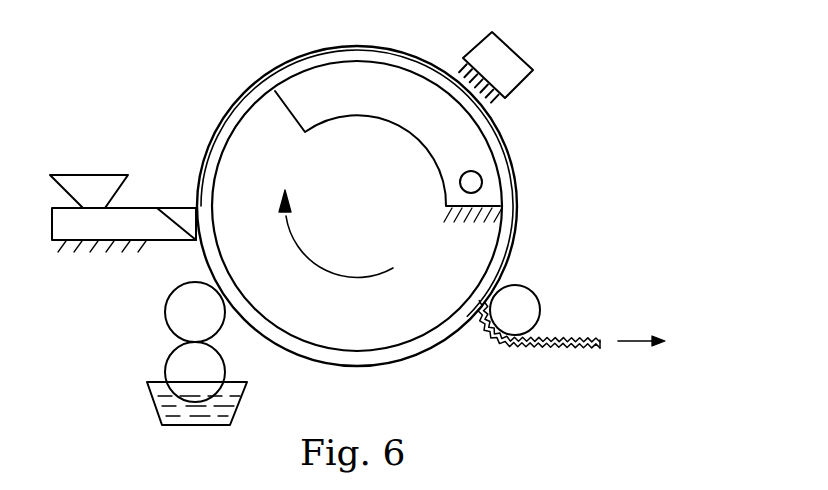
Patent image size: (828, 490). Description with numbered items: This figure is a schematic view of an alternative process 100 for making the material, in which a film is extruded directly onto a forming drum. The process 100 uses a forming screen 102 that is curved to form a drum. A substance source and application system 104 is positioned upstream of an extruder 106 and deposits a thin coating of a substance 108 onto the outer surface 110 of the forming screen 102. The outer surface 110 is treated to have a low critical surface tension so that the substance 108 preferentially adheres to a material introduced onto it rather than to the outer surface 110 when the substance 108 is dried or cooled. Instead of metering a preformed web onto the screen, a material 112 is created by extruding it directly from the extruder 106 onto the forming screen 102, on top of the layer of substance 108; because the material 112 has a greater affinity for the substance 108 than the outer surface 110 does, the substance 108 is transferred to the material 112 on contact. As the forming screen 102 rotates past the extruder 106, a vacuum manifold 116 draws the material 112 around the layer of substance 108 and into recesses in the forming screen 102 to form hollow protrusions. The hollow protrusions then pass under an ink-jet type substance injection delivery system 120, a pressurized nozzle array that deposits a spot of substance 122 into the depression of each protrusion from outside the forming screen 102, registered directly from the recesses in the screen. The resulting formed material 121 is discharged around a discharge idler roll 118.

The process 100 is at (603, 90).
The forming screen 102 is at (327, 355).
The substance source and application system 104 is at (173, 318).
The extruder 106 is at (147, 232).
The substance 108 is at (202, 258).
The outer surface 110 is at (390, 363).
The material 112 is at (218, 117).
The vacuum manifold 116 is at (480, 173).
The discharge idler roll 118 is at (527, 300).
The substance injection delivery system 120 is at (508, 55).
The formed material 121 is at (588, 347).
The substance 122 is at (462, 72).